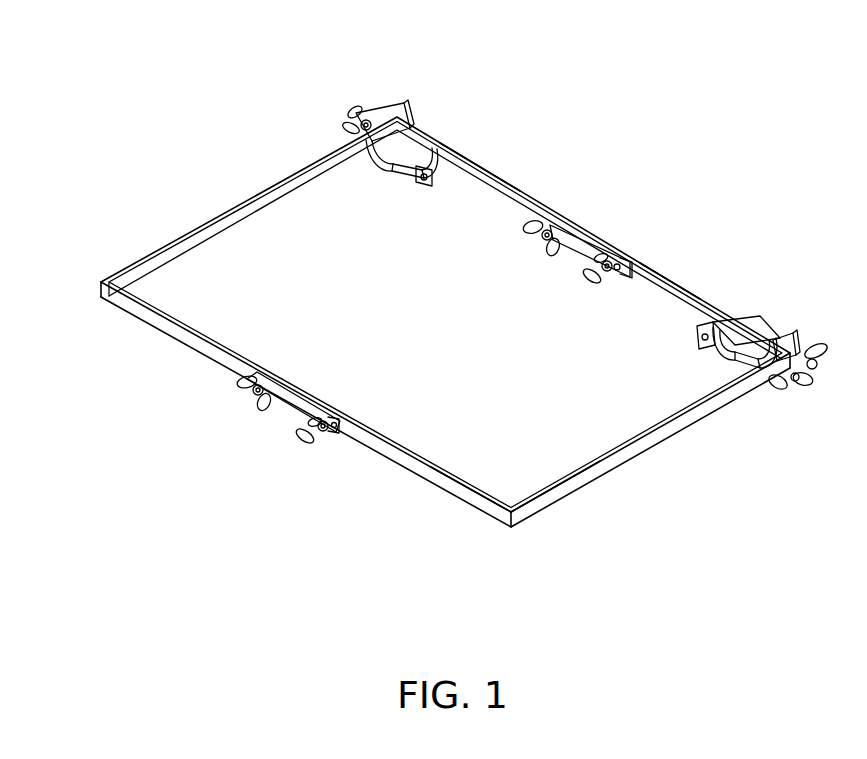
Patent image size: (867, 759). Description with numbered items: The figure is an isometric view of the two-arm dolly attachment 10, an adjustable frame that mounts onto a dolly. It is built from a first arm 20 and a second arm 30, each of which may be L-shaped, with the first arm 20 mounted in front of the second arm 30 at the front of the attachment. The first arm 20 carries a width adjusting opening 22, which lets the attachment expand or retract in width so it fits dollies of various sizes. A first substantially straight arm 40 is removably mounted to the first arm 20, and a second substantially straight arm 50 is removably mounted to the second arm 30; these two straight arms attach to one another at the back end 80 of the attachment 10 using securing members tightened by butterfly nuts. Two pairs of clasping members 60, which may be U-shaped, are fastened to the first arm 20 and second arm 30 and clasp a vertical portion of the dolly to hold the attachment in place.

The two-arm dolly attachment 10 is at (214, 92).
The first arm 20 is at (101, 286).
The width adjusting opening 22 is at (290, 402).
The second arm 30 is at (520, 518).
The first substantially straight arm 40 is at (477, 170).
The second substantially straight arm 50 is at (649, 274).
The clasping members 60 is at (400, 140).
The back end 80 is at (559, 228).